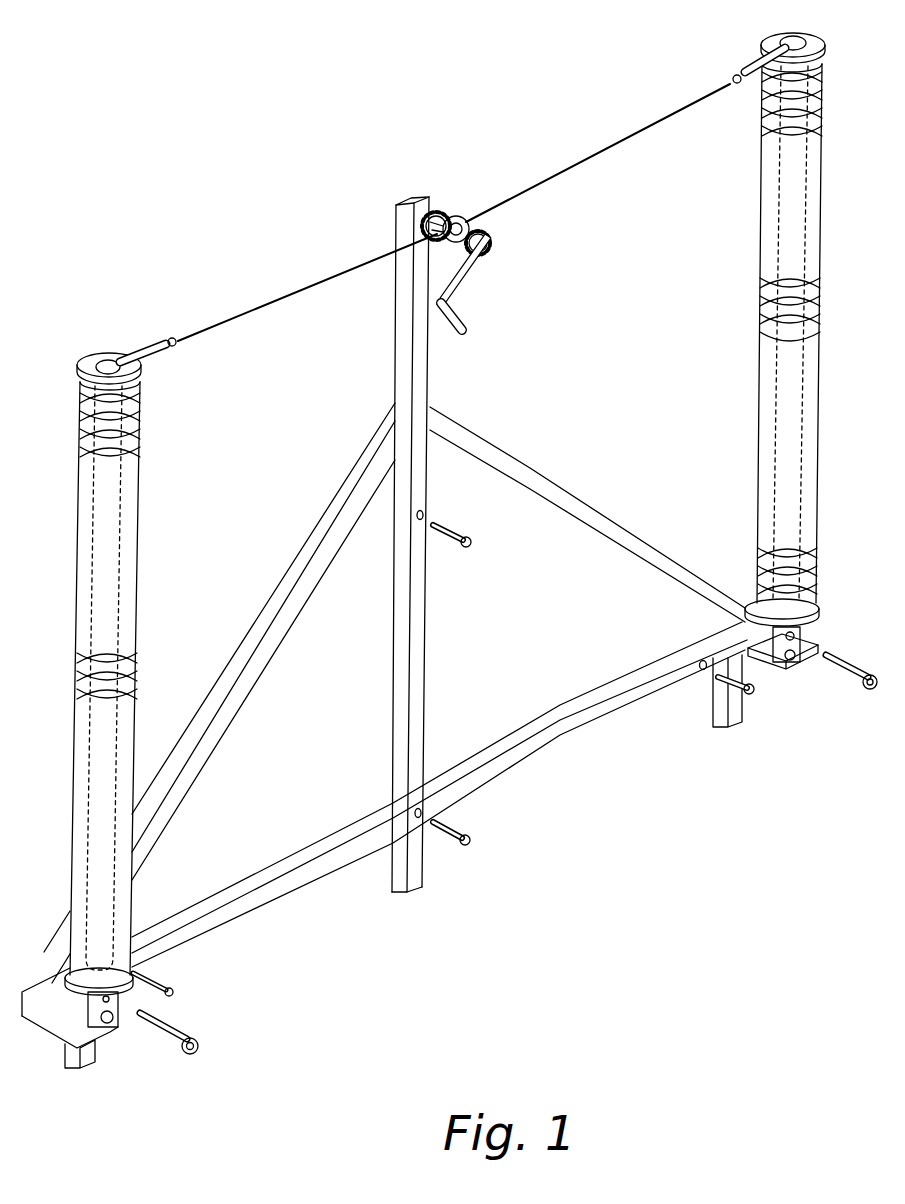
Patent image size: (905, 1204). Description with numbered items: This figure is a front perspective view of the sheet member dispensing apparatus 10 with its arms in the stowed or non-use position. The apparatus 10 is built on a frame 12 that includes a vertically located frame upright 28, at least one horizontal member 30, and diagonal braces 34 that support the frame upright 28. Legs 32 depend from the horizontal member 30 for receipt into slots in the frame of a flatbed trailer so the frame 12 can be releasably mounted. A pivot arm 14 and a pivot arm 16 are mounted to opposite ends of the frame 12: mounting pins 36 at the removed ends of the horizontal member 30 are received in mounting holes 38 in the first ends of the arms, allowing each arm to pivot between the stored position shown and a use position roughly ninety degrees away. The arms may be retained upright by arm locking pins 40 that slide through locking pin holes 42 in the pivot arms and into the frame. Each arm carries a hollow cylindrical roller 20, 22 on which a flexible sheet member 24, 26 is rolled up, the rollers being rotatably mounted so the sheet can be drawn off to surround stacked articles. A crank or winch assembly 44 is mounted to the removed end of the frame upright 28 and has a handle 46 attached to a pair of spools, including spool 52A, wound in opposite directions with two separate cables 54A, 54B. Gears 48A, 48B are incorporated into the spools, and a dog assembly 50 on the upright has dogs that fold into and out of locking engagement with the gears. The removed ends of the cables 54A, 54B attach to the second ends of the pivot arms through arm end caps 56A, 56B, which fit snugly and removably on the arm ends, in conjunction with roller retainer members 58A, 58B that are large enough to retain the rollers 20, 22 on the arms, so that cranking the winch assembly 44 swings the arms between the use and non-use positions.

The sheet member dispensing apparatus 10 is at (312, 998).
The frame 12 is at (652, 851).
The pivot arm 14 is at (728, 329).
The pivot arm 16 is at (154, 575).
The cylindrical roller 20 is at (803, 376).
The cylindrical roller 22 is at (138, 740).
The flexible sheet member 24 is at (762, 190).
The flexible sheet member 26 is at (132, 434).
The frame upright 28 is at (425, 662).
The horizontal member 30 is at (565, 721).
The legs 32 is at (720, 718).
The diagonal braces 34 is at (582, 505).
The mounting pins 36 is at (717, 641).
The mounting holes 38 is at (795, 663).
The arm locking pins 40 is at (840, 651).
The locking pin holes 42 is at (803, 632).
The crank or winch assembly 44 is at (460, 183).
The handle 46 is at (460, 330).
The gear 48A is at (490, 232).
The gear 48B is at (438, 212).
The dog assembly 50 is at (485, 258).
The spool 52A is at (470, 225).
The cable 54A is at (598, 153).
The cable 54B is at (318, 292).
The arm end cap 56A is at (790, 42).
The arm end cap 56B is at (108, 360).
The roller retainer member 58A is at (812, 38).
The roller retainer member 58B is at (98, 356).